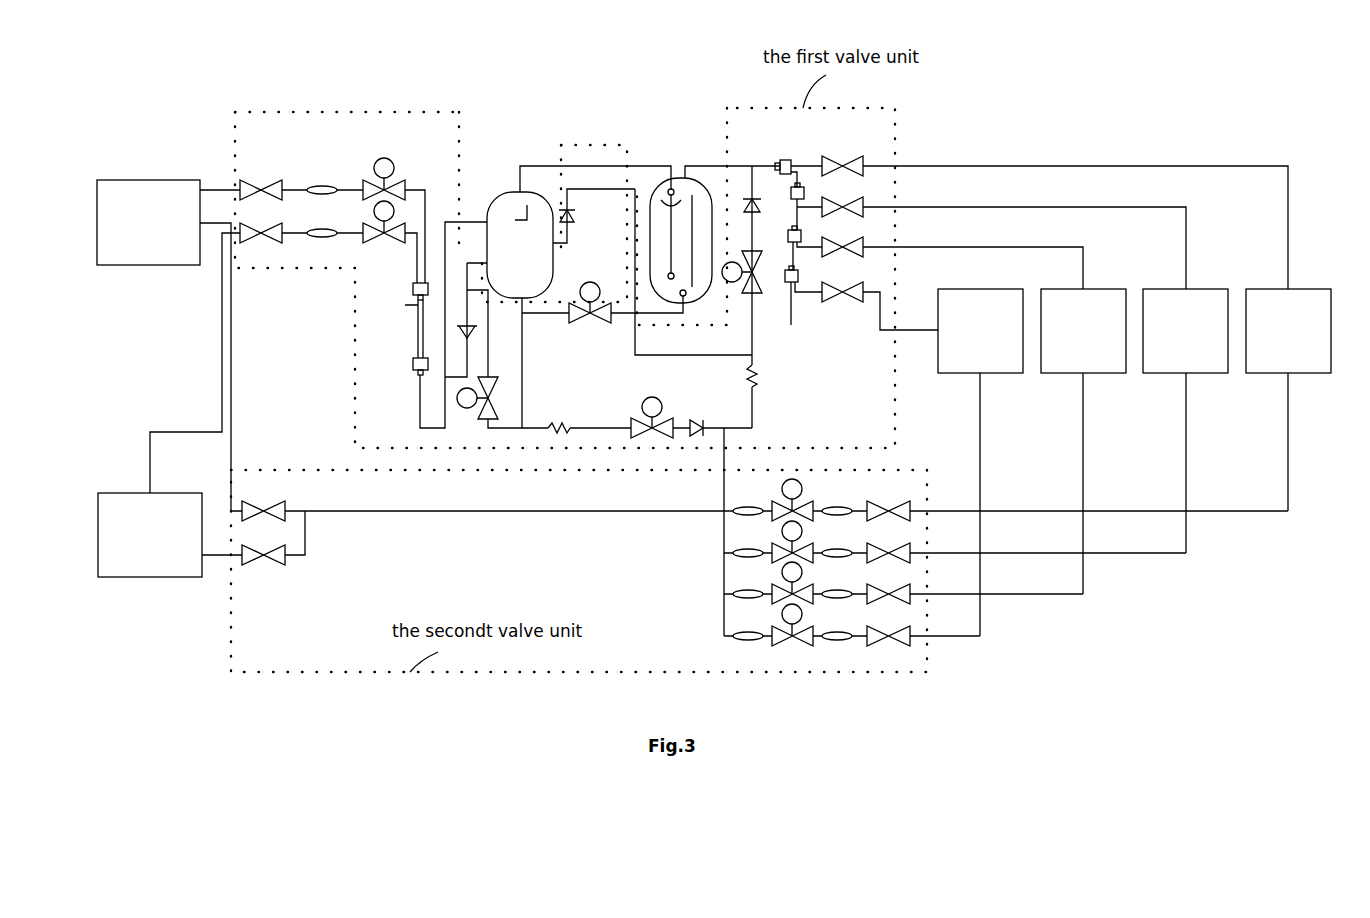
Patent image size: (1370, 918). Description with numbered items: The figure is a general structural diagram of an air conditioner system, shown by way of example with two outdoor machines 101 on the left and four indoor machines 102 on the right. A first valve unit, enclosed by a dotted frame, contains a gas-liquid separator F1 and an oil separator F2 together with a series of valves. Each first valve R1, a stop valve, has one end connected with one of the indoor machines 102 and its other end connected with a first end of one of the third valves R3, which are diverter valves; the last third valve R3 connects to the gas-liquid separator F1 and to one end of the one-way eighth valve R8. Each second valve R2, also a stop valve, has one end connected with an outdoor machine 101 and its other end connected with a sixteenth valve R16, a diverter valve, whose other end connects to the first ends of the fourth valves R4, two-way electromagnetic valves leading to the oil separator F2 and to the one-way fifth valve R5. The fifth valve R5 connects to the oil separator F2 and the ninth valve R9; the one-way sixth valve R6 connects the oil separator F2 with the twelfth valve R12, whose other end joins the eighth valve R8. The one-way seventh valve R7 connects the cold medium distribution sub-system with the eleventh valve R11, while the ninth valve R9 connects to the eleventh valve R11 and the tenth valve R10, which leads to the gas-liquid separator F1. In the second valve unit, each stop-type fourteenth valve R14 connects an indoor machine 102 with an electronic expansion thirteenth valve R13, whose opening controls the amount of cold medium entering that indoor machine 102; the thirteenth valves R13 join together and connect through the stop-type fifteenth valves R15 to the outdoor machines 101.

The outdoor machine 101 is at (160, 180).
The indoor machine 102 is at (968, 288).
The first valve R1 is at (1039, 230).
The second valve R2 is at (261, 202).
The third valve R3 is at (792, 233).
The fourth valve R4 is at (384, 201).
The fifth valve R5 is at (464, 321).
The sixth valve R6 is at (583, 215).
The seventh valve R7 is at (697, 416).
The eighth valve R8 is at (739, 206).
The ninth valve R9 is at (486, 398).
The tenth valve R10 is at (590, 314).
The eleventh valve R11 is at (652, 405).
The twelfth valve R12 is at (739, 261).
The thirteenth valve R13 is at (783, 562).
The fourteenth valve R14 is at (1050, 563).
The fifteenth valve R15 is at (263, 524).
The sixteenth valve R16 is at (400, 327).
The gas-liquid separator F1 is at (689, 244).
The oil separator F2 is at (532, 245).